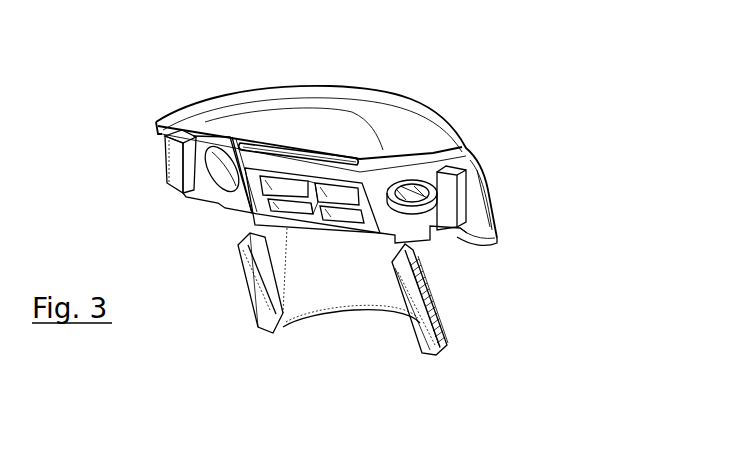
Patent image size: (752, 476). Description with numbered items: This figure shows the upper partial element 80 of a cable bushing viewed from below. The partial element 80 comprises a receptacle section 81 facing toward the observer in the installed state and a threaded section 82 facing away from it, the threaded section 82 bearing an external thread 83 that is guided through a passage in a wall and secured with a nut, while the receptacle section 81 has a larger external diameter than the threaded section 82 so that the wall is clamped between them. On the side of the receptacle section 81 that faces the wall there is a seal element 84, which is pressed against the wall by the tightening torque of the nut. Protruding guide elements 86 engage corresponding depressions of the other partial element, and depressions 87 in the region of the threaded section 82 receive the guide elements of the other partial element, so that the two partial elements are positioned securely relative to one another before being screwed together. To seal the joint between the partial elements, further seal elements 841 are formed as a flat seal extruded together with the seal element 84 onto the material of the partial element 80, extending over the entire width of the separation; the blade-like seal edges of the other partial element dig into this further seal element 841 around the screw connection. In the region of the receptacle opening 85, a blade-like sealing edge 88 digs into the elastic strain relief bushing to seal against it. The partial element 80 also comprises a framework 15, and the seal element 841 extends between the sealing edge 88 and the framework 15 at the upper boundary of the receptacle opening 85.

The framework 15 is at (330, 196).
The partial element 80 is at (396, 122).
The receptacle section 81 is at (334, 104).
The threaded section 82 is at (378, 302).
The external thread 83 is at (437, 317).
The seal element 84 is at (480, 238).
The further seal element 841 is at (212, 143).
The receptacle opening 85 is at (312, 198).
The protruding guide element 86 is at (170, 170).
The depression 87 is at (262, 274).
The sealing edge 88 is at (290, 153).